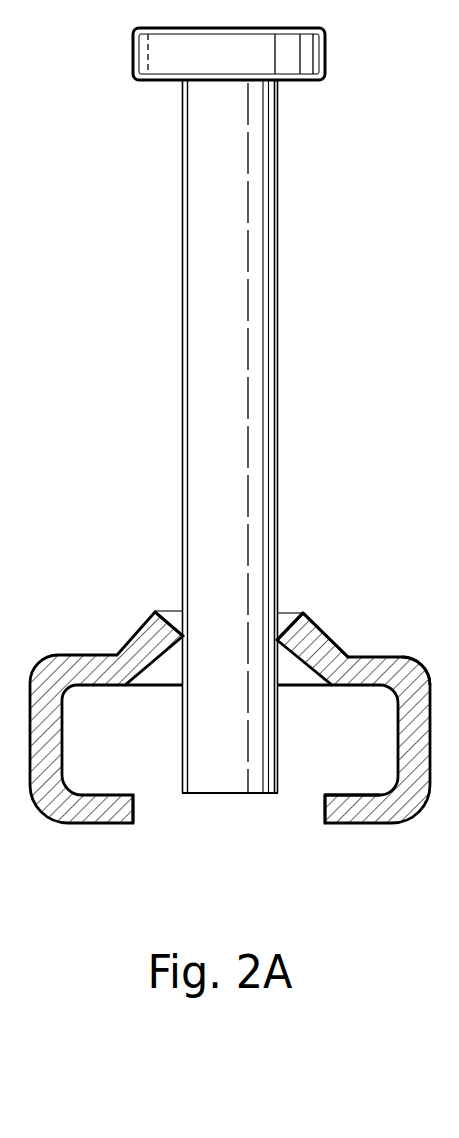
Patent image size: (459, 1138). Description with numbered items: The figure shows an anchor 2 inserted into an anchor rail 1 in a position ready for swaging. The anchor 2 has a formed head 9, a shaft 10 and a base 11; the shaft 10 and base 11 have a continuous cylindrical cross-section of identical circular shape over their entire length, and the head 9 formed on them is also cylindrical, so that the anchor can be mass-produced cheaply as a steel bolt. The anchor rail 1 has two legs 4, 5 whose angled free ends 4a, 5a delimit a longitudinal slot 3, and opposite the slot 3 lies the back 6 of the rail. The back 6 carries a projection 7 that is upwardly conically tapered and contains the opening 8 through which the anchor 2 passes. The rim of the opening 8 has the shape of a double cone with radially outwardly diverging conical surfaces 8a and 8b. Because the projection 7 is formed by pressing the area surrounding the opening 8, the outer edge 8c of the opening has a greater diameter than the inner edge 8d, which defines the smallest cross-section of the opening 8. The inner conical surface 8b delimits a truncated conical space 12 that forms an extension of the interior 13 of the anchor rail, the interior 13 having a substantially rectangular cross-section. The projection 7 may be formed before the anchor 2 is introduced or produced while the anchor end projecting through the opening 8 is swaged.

The anchor rail 1 is at (88, 641).
The anchor 2 is at (165, 256).
The longitudinal slot 3 is at (303, 800).
The leg 4 is at (63, 718).
The angled free end 4a is at (105, 810).
The leg 5 is at (410, 726).
The angled free end 5a is at (352, 806).
The back 6 is at (378, 655).
The projection 7 is at (325, 633).
The opening 8 is at (189, 639).
The conical surface 8a is at (283, 612).
The conical surface 8b is at (297, 657).
The outer edge 8c is at (160, 612).
The inner edge 8d is at (272, 638).
The head 9 is at (172, 53).
The shaft 10 is at (205, 423).
The base 11 is at (202, 775).
The truncated conical space 12 is at (158, 678).
The interior 13 is at (350, 774).